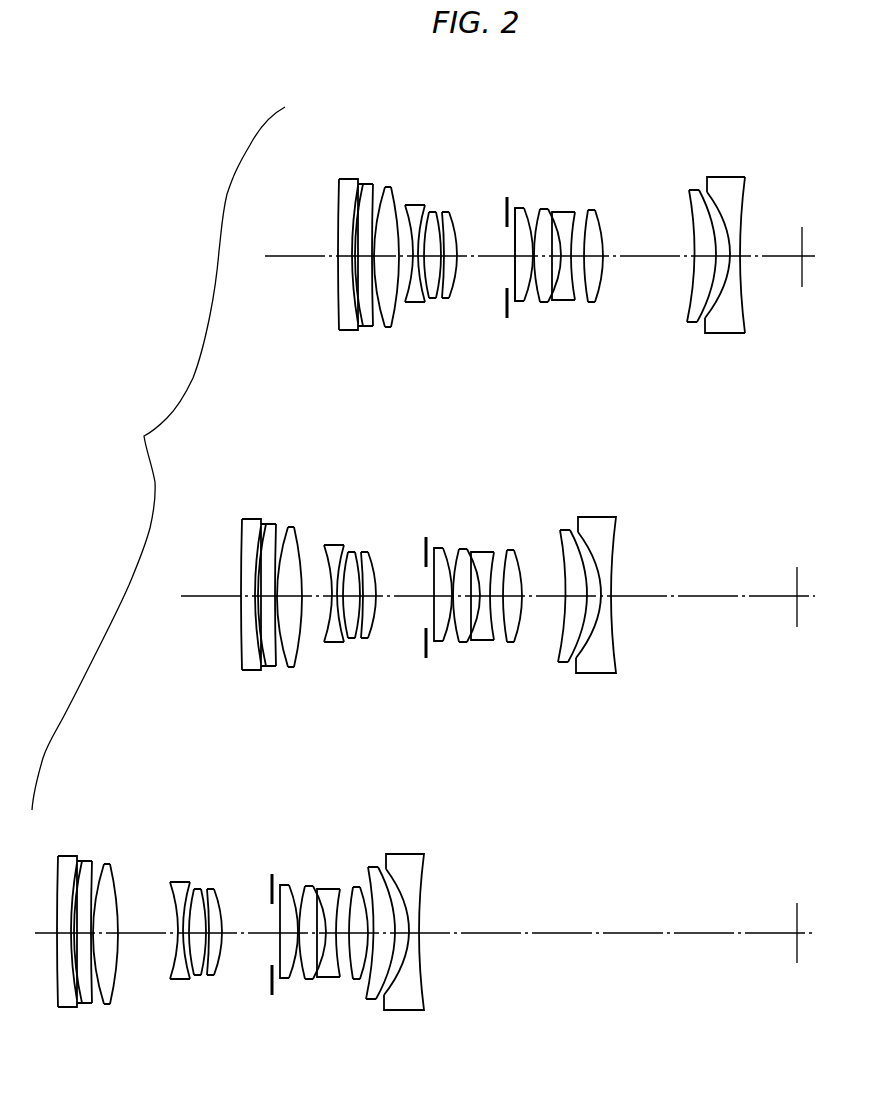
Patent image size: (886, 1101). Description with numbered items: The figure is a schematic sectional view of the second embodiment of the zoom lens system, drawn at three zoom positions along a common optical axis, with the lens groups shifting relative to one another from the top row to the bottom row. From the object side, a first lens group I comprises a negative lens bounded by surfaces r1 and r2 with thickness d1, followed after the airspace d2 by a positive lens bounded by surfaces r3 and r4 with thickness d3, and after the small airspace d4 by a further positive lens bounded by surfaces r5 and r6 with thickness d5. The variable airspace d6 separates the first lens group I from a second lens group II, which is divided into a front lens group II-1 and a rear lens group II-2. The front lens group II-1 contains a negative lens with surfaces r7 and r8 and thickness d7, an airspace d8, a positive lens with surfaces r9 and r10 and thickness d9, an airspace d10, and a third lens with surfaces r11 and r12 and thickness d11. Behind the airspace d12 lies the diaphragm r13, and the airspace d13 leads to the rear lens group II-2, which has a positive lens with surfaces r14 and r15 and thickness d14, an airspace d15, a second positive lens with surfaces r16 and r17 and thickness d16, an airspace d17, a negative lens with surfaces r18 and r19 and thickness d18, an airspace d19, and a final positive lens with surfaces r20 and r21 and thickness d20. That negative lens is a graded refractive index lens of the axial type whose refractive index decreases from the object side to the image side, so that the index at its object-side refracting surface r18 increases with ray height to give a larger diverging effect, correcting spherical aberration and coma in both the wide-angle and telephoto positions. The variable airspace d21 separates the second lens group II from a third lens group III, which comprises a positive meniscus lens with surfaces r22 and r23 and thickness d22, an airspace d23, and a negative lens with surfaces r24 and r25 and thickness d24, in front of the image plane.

The radius of curvature of first lens surface r1 is at (341, 195).
The radius of curvature of second lens surface r2 is at (354, 198).
The radius of curvature of third lens surface r3 is at (361, 188).
The radius of curvature of fourth lens surface r4 is at (375, 186).
The radius of curvature of fifth lens surface r5 is at (381, 194).
The radius of curvature of sixth lens surface r6 is at (396, 198).
The radius of curvature of seventh lens surface r7 is at (407, 203).
The radius of curvature of eighth lens surface r8 is at (422, 207).
The radius of curvature of ninth lens surface r9 is at (429, 210).
The radius of curvature of tenth lens surface r10 is at (441, 212).
The radius of curvature of eleventh lens surface r11 is at (450, 212).
The radius of curvature of twelfth lens surface r12 is at (458, 212).
The diaphragm r13 is at (505, 197).
The radius of curvature of fourteenth lens surface r14 is at (517, 207).
The radius of curvature of fifteenth lens surface r15 is at (524, 206).
The radius of curvature of sixteenth lens surface r16 is at (540, 207).
The radius of curvature of seventeenth lens surface r17 is at (549, 207).
The radius of curvature of eighteenth lens surface r18 is at (565, 210).
The radius of curvature of nineteenth lens surface r19 is at (574, 208).
The radius of curvature of twentieth lens surface r20 is at (590, 208).
The radius of curvature of twenty-first lens surface r21 is at (600, 208).
The radius of curvature of twenty-second lens surface r22 is at (689, 197).
The radius of curvature of twenty-third lens surface r23 is at (699, 192).
The radius of curvature of twenty-fourth lens surface r24 is at (716, 198).
The radius of curvature of twenty-fifth lens surface r25 is at (746, 195).
The lens thickness d1 is at (347, 256).
The airspace d2 is at (352, 253).
The lens thickness d3 is at (362, 258).
The airspace d4 is at (375, 253).
The lens thickness d5 is at (376, 325).
The variable airspace d6 is at (402, 327).
The lens thickness d7 is at (412, 302).
The airspace d8 is at (418, 256).
The lens thickness d9 is at (436, 312).
The airspace d10 is at (442, 299).
The lens thickness d11 is at (455, 258).
The airspace d12 is at (484, 290).
The airspace d13 is at (506, 236).
The lens thickness d14 is at (527, 302).
The airspace d15 is at (537, 303).
The lens thickness d16 is at (545, 302).
The airspace d17 is at (561, 255).
The lens thickness d18 is at (565, 300).
The airspace d19 is at (583, 302).
The lens thickness d20 is at (604, 262).
The variable airspace d21 is at (646, 263).
The lens thickness d22 is at (705, 260).
The airspace d23 is at (722, 252).
The lens thickness d24 is at (736, 262).
The first lens group I is at (354, 260).
The second lens group II is at (529, 262).
The front lens group II-1 is at (446, 250).
The rear lens group II-2 is at (569, 247).
The third lens group III is at (725, 284).